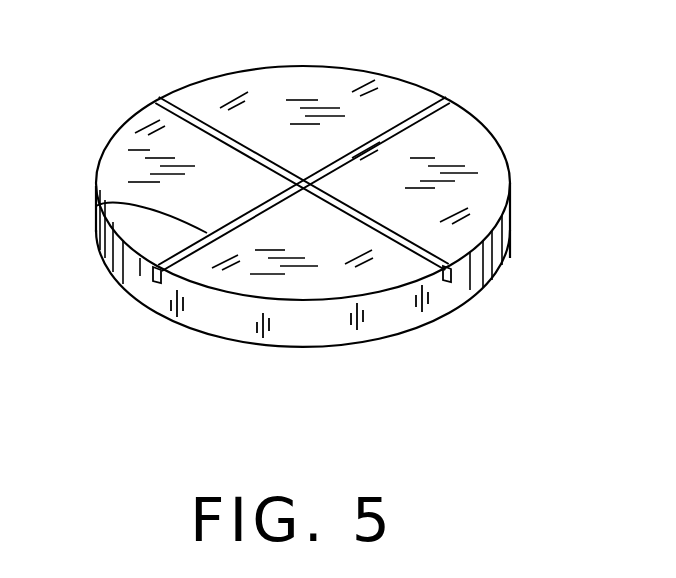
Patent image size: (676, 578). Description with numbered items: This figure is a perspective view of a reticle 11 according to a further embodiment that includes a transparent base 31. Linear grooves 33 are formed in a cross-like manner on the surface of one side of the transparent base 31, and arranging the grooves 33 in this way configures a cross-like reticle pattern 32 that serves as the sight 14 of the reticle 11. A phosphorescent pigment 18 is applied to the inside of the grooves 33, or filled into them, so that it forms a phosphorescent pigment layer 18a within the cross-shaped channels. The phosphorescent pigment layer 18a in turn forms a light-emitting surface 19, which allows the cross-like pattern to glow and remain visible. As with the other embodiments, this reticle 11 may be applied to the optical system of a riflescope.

The reticle 11 is at (499, 113).
The sight 14 is at (303, 183).
The phosphorescent pigment 18 is at (264, 160).
The phosphorescent pigment layer 18a is at (98, 206).
The light-emitting surface 19 is at (152, 272).
The transparent base 31 is at (512, 228).
The cross-like reticle pattern 32 is at (403, 122).
The linear grooves 33 is at (447, 280).